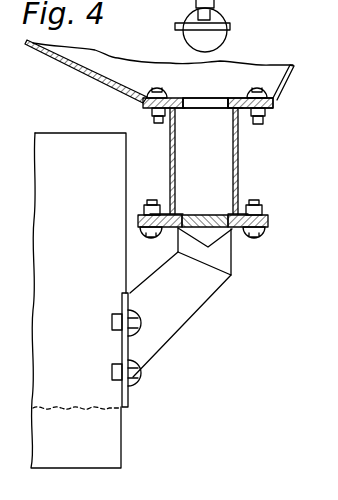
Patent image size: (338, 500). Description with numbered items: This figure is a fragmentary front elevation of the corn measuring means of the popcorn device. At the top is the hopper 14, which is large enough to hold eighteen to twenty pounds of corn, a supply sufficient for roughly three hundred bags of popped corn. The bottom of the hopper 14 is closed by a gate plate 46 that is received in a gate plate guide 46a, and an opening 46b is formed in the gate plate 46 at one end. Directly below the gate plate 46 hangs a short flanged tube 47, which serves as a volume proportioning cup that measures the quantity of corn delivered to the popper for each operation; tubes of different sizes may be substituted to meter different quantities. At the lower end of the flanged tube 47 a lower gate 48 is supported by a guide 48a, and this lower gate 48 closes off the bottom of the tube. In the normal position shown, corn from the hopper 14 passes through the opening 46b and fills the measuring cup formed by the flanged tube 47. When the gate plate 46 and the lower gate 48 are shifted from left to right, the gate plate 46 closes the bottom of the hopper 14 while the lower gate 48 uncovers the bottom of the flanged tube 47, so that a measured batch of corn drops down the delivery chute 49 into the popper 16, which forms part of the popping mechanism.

The hopper 14 is at (293, 67).
The popper 16 is at (184, 300).
The gate plate 46 is at (212, 139).
The gate plate guide 46a is at (272, 107).
The opening 46b is at (218, 100).
The flanged tube 47 is at (242, 182).
The lower gate 48 is at (215, 215).
The guide 48a is at (262, 230).
The delivery chute 49 is at (180, 318).